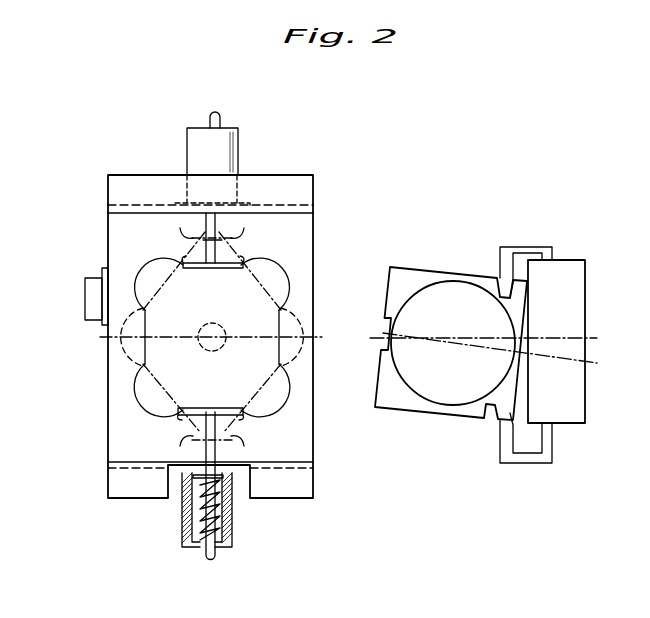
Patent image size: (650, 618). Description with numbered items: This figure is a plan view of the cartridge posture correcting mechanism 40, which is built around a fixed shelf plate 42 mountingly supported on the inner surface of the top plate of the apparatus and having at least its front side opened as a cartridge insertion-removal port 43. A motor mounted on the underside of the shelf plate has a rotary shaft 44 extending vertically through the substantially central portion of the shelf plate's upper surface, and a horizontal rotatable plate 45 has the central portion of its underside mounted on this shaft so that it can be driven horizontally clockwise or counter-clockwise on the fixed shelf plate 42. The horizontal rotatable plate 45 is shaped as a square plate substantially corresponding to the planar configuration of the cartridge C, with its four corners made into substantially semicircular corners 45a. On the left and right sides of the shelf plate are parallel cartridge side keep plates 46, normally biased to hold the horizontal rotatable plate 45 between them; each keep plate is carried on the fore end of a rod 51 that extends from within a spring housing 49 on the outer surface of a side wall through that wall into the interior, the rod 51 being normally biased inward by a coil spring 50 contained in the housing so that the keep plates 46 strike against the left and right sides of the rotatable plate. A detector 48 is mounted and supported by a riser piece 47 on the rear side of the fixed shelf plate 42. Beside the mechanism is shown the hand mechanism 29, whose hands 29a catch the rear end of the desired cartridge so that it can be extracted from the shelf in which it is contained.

The cartridge posture correcting mechanism 40 is at (235, 310).
The fixed shelf plate 42 is at (302, 432).
The cartridge insertion-removal port 43 is at (313, 237).
The rotary shaft 44 is at (218, 315).
The horizontal rotatable plate 45 is at (267, 265).
The semicircular cartridge corners 45a is at (137, 278).
The cartridge side keep plates 46 is at (181, 260).
The riser piece 47 is at (107, 268).
The detector 48 is at (90, 297).
The spring housings 49 is at (197, 152).
The coil springs 50 is at (223, 517).
The rod 51 is at (192, 268).
The hand mechanism 29 is at (572, 267).
The hands 29a is at (505, 265).
The cartridge C is at (433, 272).